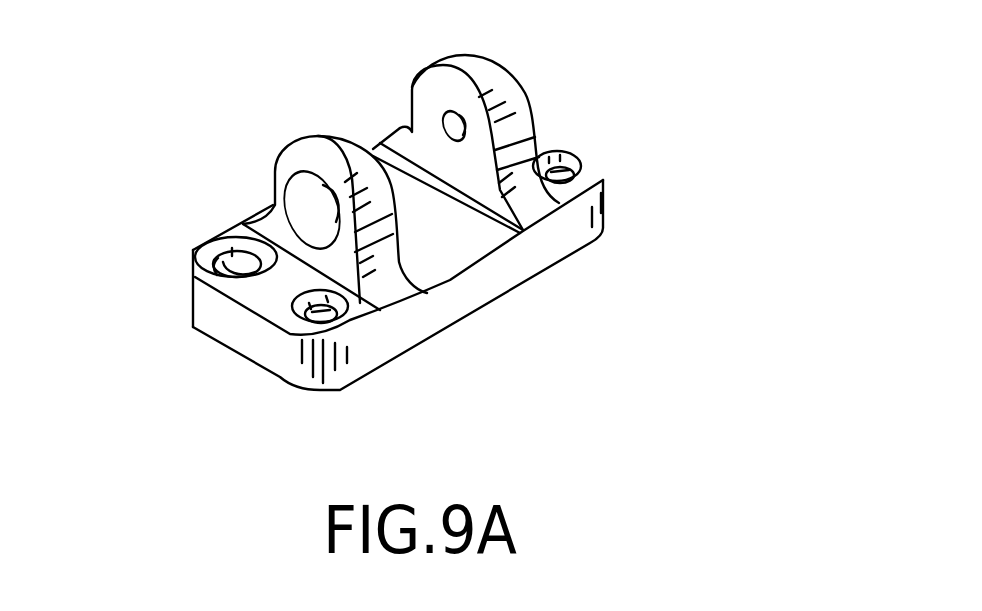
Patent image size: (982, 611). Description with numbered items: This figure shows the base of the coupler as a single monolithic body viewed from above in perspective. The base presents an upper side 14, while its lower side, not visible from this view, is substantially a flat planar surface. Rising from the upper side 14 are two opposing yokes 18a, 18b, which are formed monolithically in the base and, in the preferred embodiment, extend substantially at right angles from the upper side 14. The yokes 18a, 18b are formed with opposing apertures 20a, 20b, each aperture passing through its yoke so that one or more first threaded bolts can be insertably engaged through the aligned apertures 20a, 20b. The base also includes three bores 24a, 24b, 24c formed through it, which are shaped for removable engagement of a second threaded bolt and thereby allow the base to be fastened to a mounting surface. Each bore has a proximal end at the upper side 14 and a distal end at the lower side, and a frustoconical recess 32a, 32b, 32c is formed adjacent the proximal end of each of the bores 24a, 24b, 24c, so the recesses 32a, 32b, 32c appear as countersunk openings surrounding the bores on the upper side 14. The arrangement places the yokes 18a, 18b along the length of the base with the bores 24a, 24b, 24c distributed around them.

The upper side 14 is at (197, 327).
The opposing yoke 18a is at (357, 180).
The opposing yoke 18b is at (480, 68).
The opposing aperture 20a is at (327, 200).
The opposing aperture 20b is at (447, 122).
The bore 24a is at (240, 270).
The bore 24b is at (320, 318).
The bore 24c is at (557, 174).
The frustoconical recess 32a is at (232, 252).
The frustoconical recess 32b is at (330, 312).
The frustoconical recess 32c is at (566, 162).